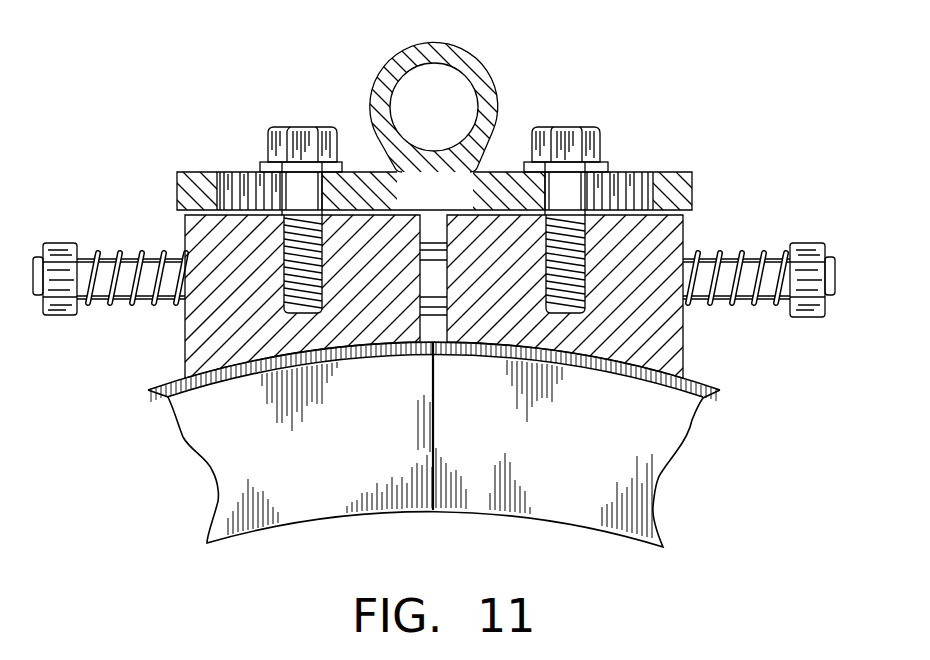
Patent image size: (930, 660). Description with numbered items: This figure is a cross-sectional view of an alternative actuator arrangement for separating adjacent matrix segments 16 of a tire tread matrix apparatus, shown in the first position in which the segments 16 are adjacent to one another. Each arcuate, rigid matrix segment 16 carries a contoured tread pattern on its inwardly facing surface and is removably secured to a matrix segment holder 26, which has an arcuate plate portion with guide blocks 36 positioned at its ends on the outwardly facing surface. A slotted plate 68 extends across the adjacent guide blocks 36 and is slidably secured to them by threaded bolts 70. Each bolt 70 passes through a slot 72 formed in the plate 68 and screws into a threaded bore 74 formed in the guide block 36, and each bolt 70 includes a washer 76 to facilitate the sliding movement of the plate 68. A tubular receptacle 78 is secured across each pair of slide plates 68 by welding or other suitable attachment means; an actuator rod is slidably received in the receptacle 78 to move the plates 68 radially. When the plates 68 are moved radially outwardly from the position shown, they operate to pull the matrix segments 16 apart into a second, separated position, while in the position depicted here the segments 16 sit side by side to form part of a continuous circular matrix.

The matrix segment 16 is at (218, 472).
The matrix segment holder 26 is at (158, 382).
The guide block 36 is at (182, 341).
The slotted plate 68 is at (700, 183).
The threaded bolt 70 is at (302, 132).
The slot 72 is at (228, 189).
The threaded bore 74 is at (284, 238).
The washer 76 is at (270, 167).
The tubular receptacle 78 is at (445, 43).